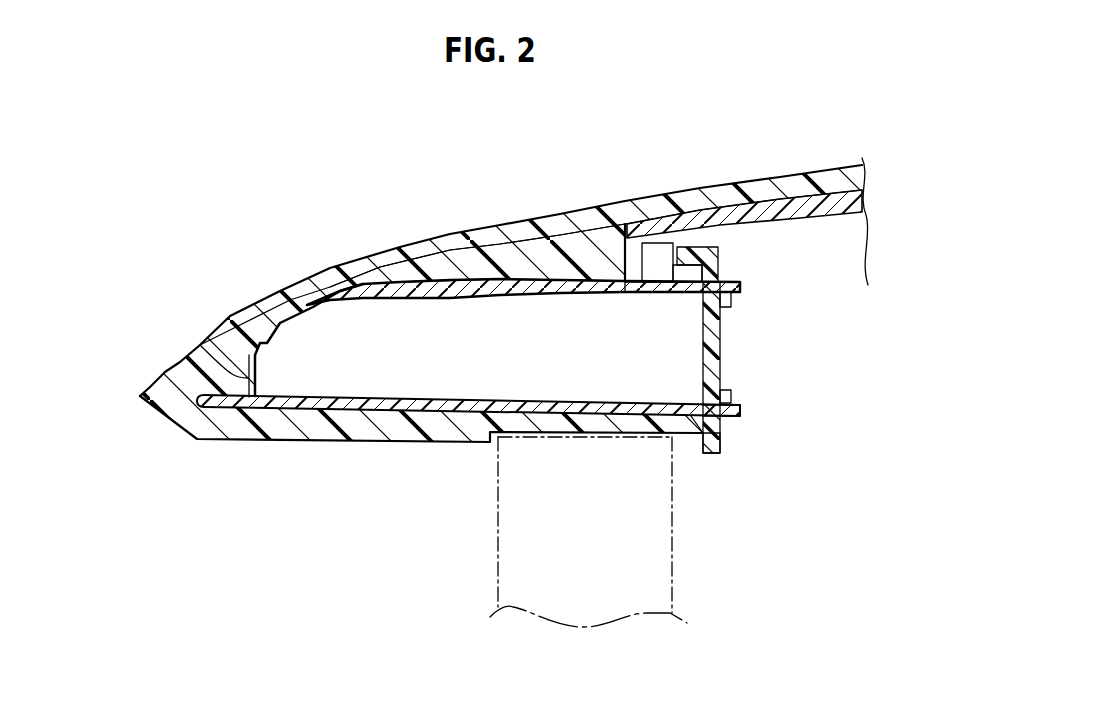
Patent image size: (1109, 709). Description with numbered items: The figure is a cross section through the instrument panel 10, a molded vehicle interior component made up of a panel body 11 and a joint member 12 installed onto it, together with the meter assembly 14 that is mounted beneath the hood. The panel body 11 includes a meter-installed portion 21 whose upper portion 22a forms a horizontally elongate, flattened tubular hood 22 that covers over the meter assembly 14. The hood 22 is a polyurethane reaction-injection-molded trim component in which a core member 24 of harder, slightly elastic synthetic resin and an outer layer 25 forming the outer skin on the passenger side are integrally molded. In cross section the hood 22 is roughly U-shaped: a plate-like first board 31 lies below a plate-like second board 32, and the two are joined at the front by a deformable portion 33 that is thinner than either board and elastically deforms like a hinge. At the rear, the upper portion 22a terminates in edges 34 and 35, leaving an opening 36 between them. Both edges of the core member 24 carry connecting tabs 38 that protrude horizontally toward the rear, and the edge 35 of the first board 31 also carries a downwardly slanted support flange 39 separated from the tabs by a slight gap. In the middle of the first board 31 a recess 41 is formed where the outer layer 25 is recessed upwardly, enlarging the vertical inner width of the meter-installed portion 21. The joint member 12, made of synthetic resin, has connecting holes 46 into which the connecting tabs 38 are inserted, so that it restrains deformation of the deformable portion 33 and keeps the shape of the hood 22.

The instrument panel 10 is at (146, 202).
The panel body 11 is at (290, 290).
The joint member 12 is at (723, 365).
The meter assembly 14 is at (497, 578).
The meter-installed portion 21 is at (517, 434).
The hood 22 is at (418, 240).
The upper portion 22a is at (216, 321).
The core member 24 is at (520, 284).
The outer layer 25 is at (458, 250).
The first board 31 is at (565, 416).
The second board 32 is at (560, 281).
The deformable portion 33 is at (207, 345).
The edge 34 is at (720, 263).
The edge 35 is at (722, 448).
The opening 36 is at (688, 338).
The connecting tab 38 is at (740, 287).
The support flange 39 is at (695, 438).
The recess 41 is at (503, 447).
The connecting hole 46 is at (731, 304).